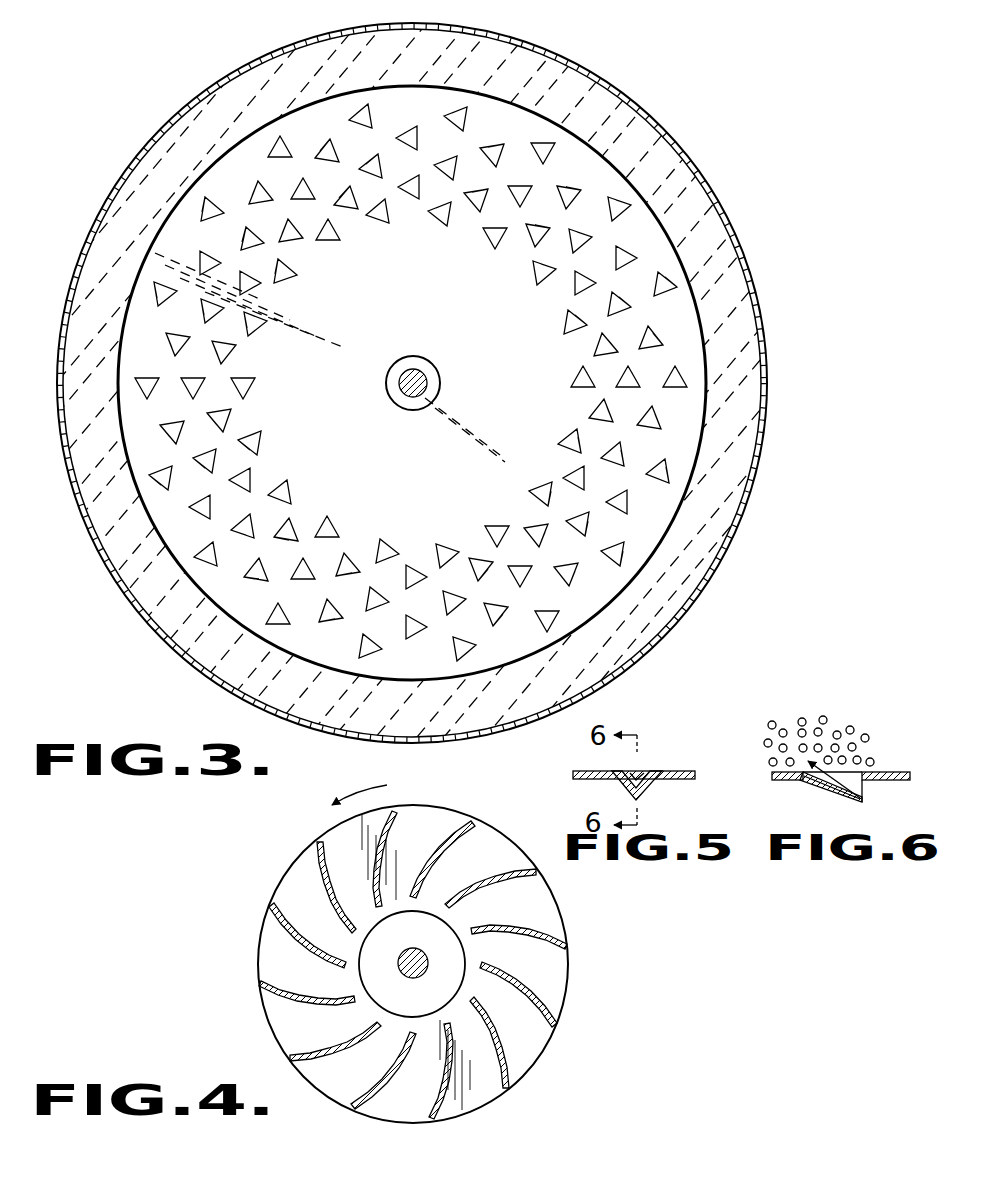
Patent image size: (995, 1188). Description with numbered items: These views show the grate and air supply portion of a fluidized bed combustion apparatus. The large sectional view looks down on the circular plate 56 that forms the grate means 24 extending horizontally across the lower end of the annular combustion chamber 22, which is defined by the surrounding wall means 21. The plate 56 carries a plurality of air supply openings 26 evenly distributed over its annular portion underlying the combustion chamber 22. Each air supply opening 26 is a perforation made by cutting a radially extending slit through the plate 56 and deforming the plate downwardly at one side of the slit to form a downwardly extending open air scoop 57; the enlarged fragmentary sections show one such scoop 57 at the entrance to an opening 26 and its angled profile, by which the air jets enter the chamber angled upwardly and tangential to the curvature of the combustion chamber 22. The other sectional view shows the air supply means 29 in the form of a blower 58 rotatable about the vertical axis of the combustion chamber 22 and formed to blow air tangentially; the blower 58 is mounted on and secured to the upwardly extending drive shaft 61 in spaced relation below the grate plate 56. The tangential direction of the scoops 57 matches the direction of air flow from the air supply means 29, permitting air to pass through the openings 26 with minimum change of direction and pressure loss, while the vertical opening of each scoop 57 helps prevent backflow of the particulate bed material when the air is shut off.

In FIG. 3, the wall means 21 is at (176, 114).
In FIG. 3, the annular combustion chamber 22 is at (525, 138).
In FIG. 3, the grate means 24 is at (156, 216).
In FIG. 5, the air supply openings 26 is at (641, 783).
In FIG. 6, the air supply openings 26 is at (853, 788).
In FIG. 4, the air supply means 29 is at (268, 891).
In FIG. 3, the circular plate 56 is at (348, 477).
In FIG. 5, the circular plate 56 is at (580, 768).
In FIG. 6, the circular plate 56 is at (900, 769).
In FIG. 3, the air scoop 57 is at (258, 430).
In FIG. 5, the air scoop 57 is at (656, 796).
In FIG. 6, the air scoop 57 is at (832, 793).
In FIG. 4, the blower 58 is at (258, 941).
In FIG. 3, the drive shaft 61 is at (421, 378).
In FIG. 4, the drive shaft 61 is at (424, 968).